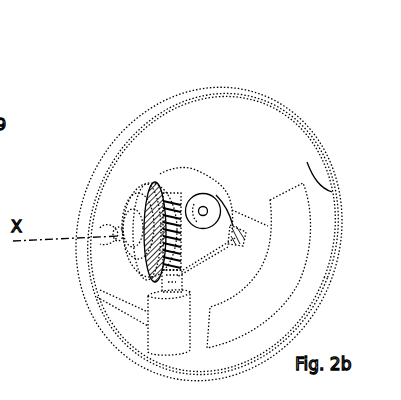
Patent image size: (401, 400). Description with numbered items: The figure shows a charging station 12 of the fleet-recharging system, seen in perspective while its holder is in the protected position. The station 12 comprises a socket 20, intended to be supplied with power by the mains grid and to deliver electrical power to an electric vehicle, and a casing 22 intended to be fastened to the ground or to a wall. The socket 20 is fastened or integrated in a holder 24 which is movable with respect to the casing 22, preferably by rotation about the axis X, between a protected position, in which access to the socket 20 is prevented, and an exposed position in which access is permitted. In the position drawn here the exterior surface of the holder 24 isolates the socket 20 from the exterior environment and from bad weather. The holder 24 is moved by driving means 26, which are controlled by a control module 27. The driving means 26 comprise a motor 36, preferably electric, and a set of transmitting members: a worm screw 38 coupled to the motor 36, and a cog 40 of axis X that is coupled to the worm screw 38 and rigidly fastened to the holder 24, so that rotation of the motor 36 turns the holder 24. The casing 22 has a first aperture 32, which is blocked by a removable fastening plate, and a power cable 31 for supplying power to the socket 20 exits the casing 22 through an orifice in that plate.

The charging station 12 is at (142, 90).
The socket 20 is at (213, 190).
The casing 22 is at (309, 128).
The holder 24 is at (185, 172).
The driving means 26 is at (158, 182).
The control module 27 is at (280, 265).
The power cable 31 is at (97, 290).
The first aperture 32 is at (334, 193).
The motor 36 is at (155, 333).
The worm screw 38 is at (157, 262).
The cog 40 is at (122, 200).